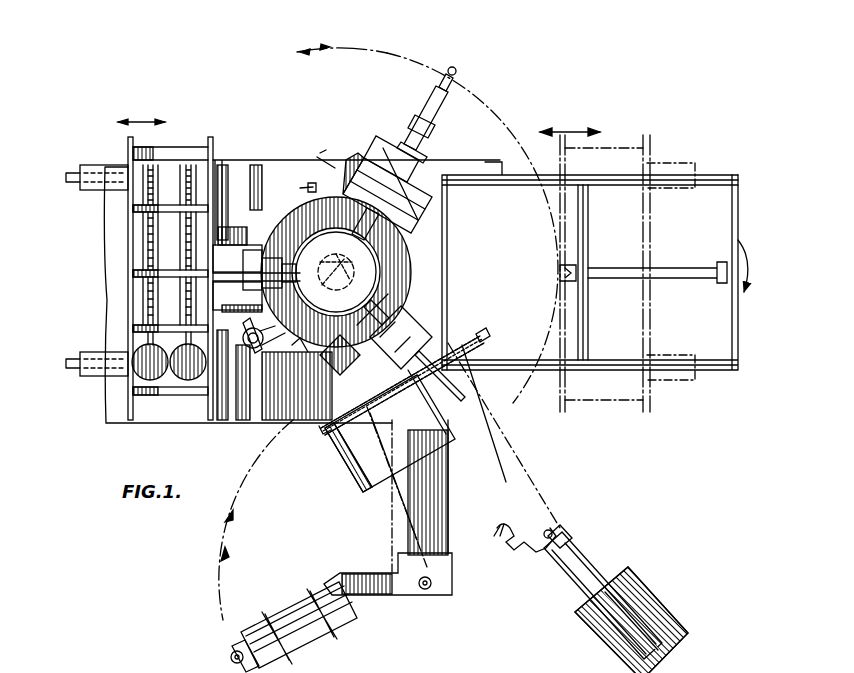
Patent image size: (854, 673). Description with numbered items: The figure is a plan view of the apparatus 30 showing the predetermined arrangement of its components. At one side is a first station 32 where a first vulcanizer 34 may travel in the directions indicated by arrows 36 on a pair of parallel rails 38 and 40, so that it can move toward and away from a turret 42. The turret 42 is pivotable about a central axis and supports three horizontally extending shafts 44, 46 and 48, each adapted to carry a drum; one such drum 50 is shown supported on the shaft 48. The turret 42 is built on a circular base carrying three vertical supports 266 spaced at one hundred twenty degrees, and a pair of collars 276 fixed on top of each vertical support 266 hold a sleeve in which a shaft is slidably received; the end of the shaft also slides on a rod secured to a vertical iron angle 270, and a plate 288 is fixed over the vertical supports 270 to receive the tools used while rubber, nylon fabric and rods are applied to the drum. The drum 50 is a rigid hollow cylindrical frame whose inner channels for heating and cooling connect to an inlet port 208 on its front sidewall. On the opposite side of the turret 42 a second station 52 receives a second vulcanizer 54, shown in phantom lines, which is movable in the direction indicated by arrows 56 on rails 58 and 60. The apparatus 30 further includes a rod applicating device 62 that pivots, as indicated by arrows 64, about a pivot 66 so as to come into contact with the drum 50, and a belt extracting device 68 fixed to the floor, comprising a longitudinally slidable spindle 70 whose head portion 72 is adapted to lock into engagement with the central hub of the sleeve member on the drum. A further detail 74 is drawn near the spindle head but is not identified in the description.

The apparatus 30 is at (520, 80).
The first station 32 is at (98, 272).
The first vulcanizer 34 is at (182, 170).
The arrows 36 is at (160, 100).
The rail 38 is at (74, 354).
The rail 40 is at (85, 148).
The turret 42 is at (324, 222).
The shaft 44 is at (277, 345).
The shaft 46 is at (410, 234).
The shaft 48 is at (420, 316).
The drum 50 is at (400, 500).
The second station 52 is at (738, 238).
The second vulcanizer 54 is at (654, 138).
The arrows 56 is at (570, 128).
The rail 58 is at (720, 372).
The rail 60 is at (718, 175).
The rod applicating device 62 is at (298, 562).
The arrows 64 is at (248, 516).
The pivot 66 is at (428, 595).
The belt extracting device 68 is at (702, 576).
The spindle 70 is at (590, 565).
The head portion 72 is at (592, 492).
The gripper 74 is at (516, 560).
The inlet port 208 is at (460, 650).
The vertical support 266 is at (438, 338).
The vertical iron angle 270 is at (309, 362).
The collar 276 is at (368, 200).
The plate 288 is at (372, 268).